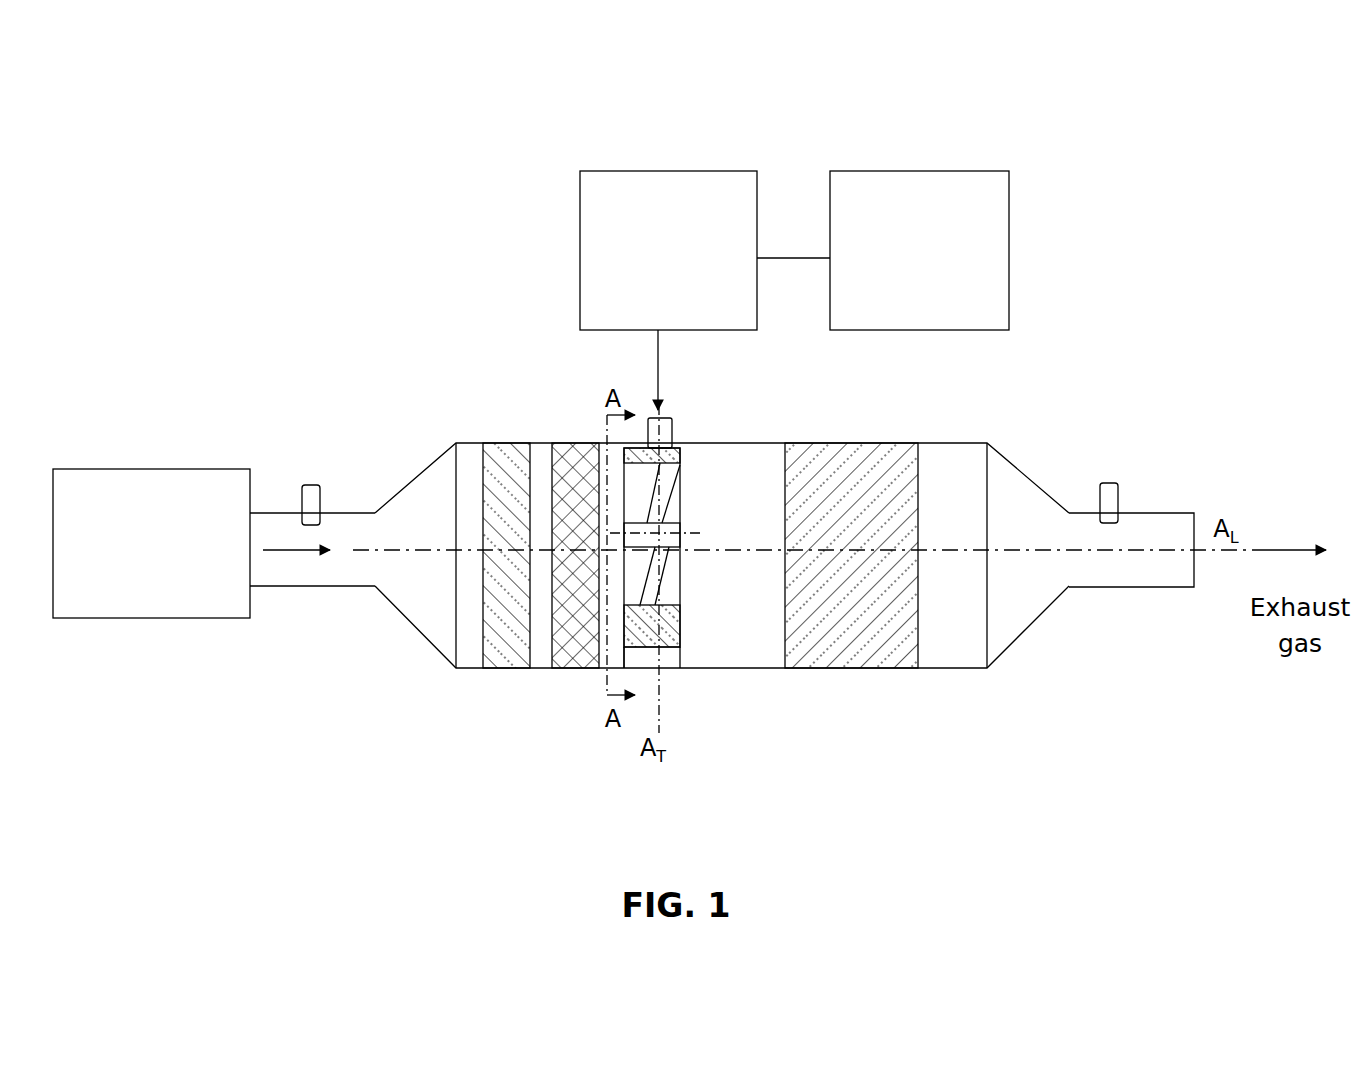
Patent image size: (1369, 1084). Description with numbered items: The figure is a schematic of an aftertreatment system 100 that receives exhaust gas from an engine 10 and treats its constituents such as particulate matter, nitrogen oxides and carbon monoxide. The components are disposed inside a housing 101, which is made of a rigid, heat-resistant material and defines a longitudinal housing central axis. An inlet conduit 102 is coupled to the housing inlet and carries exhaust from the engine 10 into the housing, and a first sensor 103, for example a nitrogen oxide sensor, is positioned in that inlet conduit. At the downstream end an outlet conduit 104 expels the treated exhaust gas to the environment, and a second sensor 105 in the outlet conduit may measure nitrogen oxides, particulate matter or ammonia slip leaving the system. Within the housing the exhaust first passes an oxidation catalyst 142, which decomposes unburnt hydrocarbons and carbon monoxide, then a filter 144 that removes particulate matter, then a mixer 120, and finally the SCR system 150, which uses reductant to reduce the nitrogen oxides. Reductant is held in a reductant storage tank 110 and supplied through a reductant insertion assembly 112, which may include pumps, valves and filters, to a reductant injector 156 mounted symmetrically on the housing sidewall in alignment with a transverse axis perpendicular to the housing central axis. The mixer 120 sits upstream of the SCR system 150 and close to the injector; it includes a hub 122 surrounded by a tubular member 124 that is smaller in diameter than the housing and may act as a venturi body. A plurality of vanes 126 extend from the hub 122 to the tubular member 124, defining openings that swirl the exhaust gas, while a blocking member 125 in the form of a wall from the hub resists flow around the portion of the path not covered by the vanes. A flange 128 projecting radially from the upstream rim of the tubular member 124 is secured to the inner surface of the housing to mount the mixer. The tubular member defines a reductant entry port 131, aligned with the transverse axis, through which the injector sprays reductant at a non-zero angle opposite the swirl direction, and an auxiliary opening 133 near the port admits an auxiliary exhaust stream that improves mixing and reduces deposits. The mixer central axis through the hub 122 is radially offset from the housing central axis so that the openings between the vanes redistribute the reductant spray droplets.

The aftertreatment system 100 is at (1180, 116).
The engine 10 is at (136, 567).
The housing 101 is at (955, 670).
The inlet conduit 102 is at (343, 588).
The first sensor 103 is at (321, 492).
The outlet conduit 104 is at (1147, 588).
The second sensor 105 is at (1119, 492).
The reductant storage tank 110 is at (896, 324).
The reductant insertion assembly 112 is at (645, 324).
The mixer 120 is at (679, 657).
The hub 122 is at (681, 526).
The tubular member 124 is at (672, 628).
The blocking member 125 is at (682, 482).
The vanes 126 is at (658, 568).
The flange 128 is at (620, 656).
The reductant entry port 131 is at (667, 440).
The auxiliary opening 133 is at (684, 458).
The oxidation catalyst 142 is at (492, 448).
The filter 144 is at (556, 448).
The SCR system 150 is at (838, 646).
The reductant injector 156 is at (651, 420).